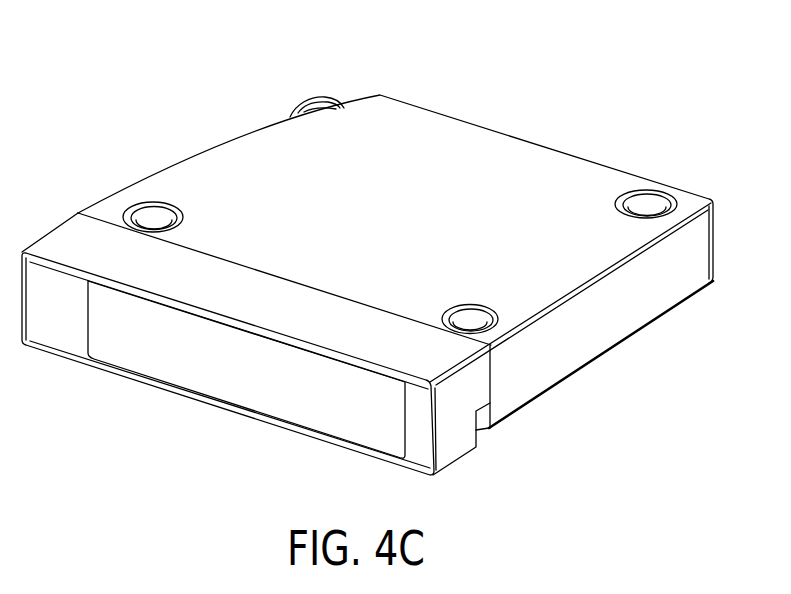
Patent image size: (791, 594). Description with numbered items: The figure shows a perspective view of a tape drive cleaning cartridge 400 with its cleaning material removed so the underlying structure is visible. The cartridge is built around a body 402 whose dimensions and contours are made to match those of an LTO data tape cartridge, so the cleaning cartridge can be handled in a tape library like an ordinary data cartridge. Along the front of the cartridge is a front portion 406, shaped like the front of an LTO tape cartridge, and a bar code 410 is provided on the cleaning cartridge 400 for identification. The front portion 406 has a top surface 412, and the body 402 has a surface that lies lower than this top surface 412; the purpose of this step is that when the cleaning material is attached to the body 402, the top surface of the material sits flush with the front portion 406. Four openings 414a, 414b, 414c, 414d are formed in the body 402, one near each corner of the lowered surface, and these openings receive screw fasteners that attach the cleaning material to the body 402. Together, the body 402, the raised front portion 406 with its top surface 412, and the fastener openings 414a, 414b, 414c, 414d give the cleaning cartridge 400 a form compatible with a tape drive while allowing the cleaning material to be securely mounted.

The tape drive cleaning cartridge 400 is at (570, 82).
The body 402 is at (495, 147).
The front portion 406 is at (248, 302).
The bar code 410 is at (70, 240).
The top surface 412 is at (547, 265).
The opening 414a is at (467, 317).
The opening 414b is at (648, 203).
The opening 414c is at (152, 218).
The opening 414d is at (312, 100).